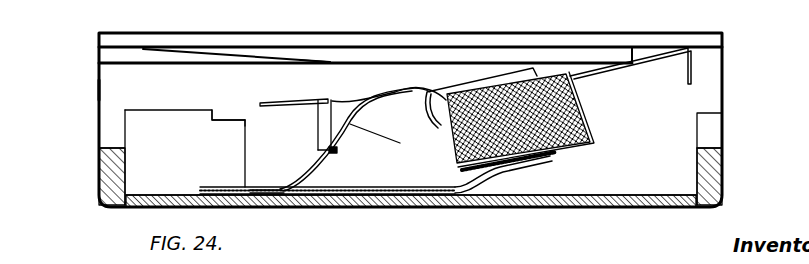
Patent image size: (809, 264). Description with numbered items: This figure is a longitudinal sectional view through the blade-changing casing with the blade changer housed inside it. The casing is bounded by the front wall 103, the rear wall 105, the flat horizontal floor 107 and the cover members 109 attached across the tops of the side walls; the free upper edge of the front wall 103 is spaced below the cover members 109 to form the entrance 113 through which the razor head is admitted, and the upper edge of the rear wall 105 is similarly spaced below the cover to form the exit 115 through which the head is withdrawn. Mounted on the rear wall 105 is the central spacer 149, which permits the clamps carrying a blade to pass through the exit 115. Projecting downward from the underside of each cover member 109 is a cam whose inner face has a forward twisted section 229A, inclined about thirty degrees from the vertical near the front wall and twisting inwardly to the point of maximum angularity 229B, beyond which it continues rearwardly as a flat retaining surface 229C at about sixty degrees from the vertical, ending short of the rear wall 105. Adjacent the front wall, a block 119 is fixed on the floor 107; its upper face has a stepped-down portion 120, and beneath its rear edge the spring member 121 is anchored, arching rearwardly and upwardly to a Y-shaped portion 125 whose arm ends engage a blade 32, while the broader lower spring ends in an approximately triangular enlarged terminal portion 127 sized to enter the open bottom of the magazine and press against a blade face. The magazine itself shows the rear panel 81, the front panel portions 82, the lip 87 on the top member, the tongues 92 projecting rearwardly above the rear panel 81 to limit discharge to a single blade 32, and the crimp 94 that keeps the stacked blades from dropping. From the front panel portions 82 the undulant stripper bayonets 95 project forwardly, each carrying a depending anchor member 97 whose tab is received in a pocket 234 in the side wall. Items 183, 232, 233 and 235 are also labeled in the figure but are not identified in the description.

The razor blade 32 is at (560, 142).
The rear panel 81 is at (578, 100).
The front panel portions 82 is at (446, 106).
The lip 87 is at (487, 85).
The tongue 92 is at (664, 66).
The crimp 94 is at (473, 182).
The stripper bayonet 95 is at (348, 98).
The anchor member 97 is at (352, 124).
The front wall 103 is at (112, 178).
The rear wall 105 is at (716, 166).
The floor 107 is at (478, 200).
The cover member 109 is at (427, 44).
The entrance 113 is at (92, 91).
The exit 115 is at (707, 72).
The block 119 is at (148, 134).
The stepped-down portion 120 is at (237, 130).
The spring member 121 is at (241, 186).
The Y-shaped portion 125 is at (362, 109).
The enlarged terminal portion 127 is at (487, 172).
The central spacer 149 is at (715, 130).
The gasket 183 is at (200, 193).
The forward twisted section 229A is at (140, 57).
The point of maximum angularity 229B is at (246, 60).
The flat retaining surface 229C is at (336, 65).
The plate 232 is at (318, 140).
The joint 233 is at (337, 152).
The pocket 234 is at (325, 156).
The post 235 is at (318, 151).